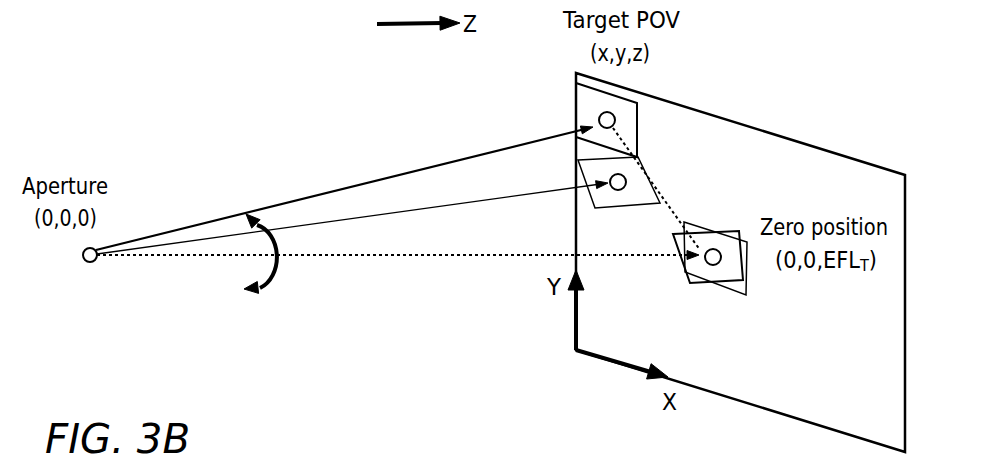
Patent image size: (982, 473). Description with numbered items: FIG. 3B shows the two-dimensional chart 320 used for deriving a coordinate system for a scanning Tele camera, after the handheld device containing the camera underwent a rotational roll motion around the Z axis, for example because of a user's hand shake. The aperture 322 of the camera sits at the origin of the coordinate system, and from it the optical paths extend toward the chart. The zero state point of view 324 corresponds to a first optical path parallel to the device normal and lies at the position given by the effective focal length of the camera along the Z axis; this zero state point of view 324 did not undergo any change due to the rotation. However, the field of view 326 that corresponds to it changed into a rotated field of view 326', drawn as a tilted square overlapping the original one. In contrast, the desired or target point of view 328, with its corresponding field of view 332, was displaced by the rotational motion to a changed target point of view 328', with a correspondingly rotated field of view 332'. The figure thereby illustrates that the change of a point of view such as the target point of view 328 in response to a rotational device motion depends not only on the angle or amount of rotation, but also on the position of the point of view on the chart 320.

The 2D chart 320 is at (848, 157).
The aperture 322 is at (90, 263).
The zero state POV 324 is at (373, 257).
The FOV 326 is at (709, 291).
The rotated FOV 326' is at (760, 283).
The target POV 328 is at (344, 188).
The changed target POV 328' is at (352, 217).
The FOV 332 is at (652, 120).
The rotated FOV 332' is at (672, 182).